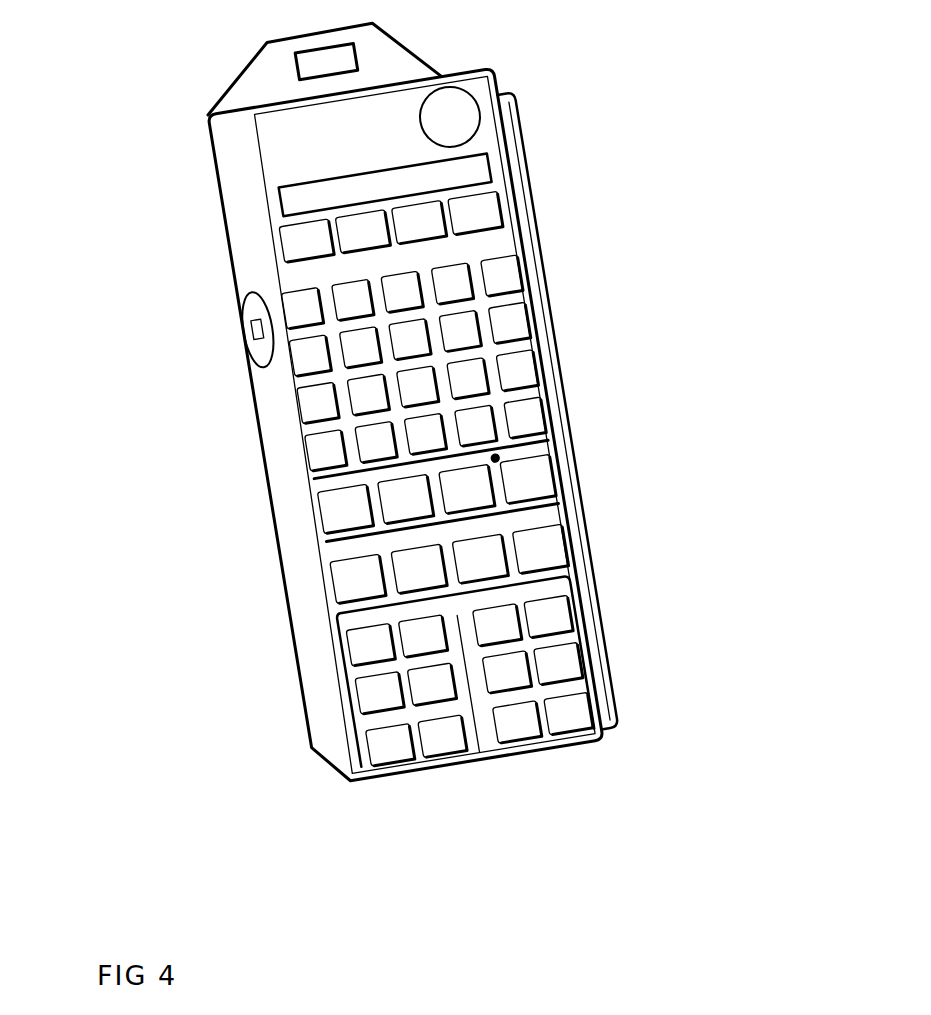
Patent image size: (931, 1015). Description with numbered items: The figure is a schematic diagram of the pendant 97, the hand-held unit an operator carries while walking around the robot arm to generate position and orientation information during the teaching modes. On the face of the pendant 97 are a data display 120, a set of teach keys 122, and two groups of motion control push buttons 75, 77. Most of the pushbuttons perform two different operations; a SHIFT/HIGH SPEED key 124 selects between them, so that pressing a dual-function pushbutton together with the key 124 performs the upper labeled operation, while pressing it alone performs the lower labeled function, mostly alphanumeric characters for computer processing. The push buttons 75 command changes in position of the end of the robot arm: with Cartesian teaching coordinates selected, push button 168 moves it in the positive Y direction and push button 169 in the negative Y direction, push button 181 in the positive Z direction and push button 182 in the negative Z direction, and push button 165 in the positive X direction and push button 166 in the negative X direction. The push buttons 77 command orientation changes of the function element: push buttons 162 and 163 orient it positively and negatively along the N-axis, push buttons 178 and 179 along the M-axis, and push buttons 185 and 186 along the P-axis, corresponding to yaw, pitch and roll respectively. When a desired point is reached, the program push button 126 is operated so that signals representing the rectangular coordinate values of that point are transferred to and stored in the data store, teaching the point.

The pendant 97 is at (567, 67).
The data display 120 is at (480, 170).
The teach keys 122 is at (508, 250).
The program push button 126 is at (278, 246).
The SHIFT/HIGH SPEED key 124 is at (253, 333).
The motion control push buttons 75 is at (357, 609).
The motion control push buttons 77 is at (569, 585).
The push button 168 is at (348, 651).
The push button 169 is at (427, 658).
The push button 181 is at (357, 702).
The push button 182 is at (433, 710).
The push button 165 is at (363, 763).
The push button 166 is at (440, 762).
The push button 178 is at (513, 648).
The push button 179 is at (575, 617).
The push button 162 is at (522, 694).
The push button 163 is at (587, 668).
The push button 185 is at (527, 750).
The push button 186 is at (595, 718).